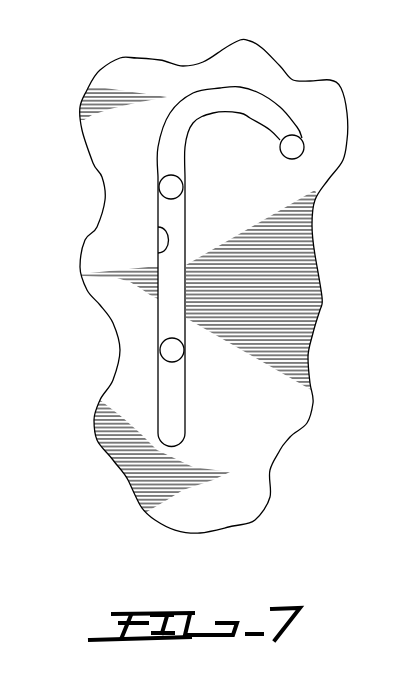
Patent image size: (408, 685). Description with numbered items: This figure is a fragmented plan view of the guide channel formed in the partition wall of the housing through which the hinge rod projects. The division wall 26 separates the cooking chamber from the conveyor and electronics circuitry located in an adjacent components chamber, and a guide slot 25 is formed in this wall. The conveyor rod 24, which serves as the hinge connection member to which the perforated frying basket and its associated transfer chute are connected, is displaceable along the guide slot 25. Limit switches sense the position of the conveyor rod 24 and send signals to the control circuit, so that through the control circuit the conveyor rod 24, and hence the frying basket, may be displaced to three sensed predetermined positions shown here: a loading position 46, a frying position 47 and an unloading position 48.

The conveyor rod 24 is at (292, 147).
The guide slot 25 is at (157, 255).
The division wall 26 is at (258, 433).
The loading position 46 is at (146, 184).
The frying position 47 is at (147, 350).
The unloading position 48 is at (316, 130).